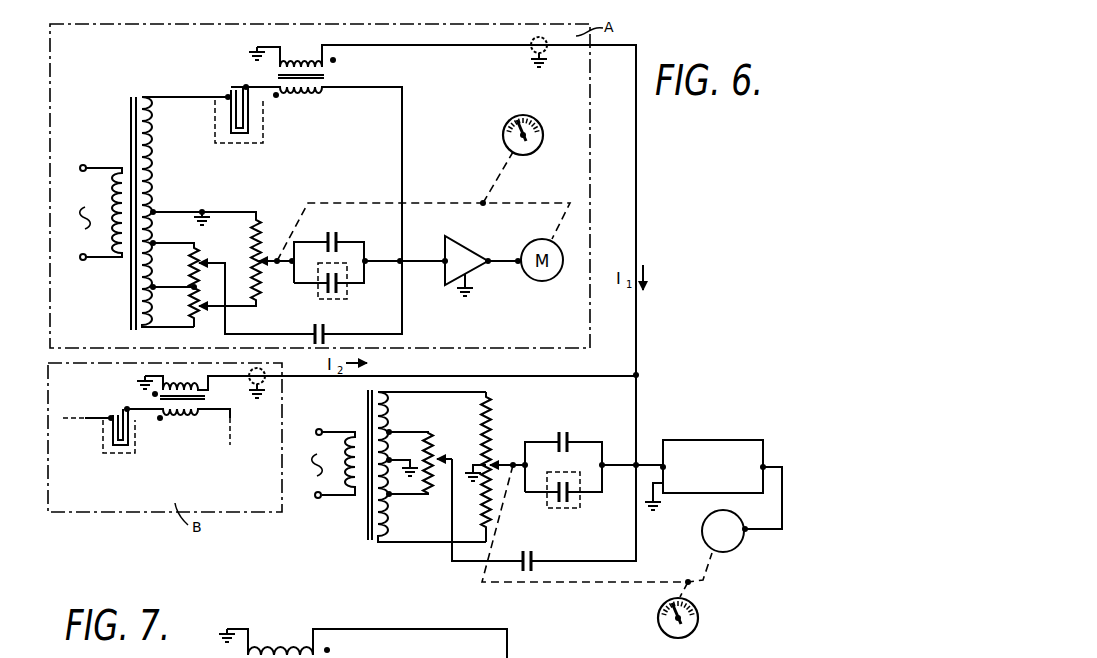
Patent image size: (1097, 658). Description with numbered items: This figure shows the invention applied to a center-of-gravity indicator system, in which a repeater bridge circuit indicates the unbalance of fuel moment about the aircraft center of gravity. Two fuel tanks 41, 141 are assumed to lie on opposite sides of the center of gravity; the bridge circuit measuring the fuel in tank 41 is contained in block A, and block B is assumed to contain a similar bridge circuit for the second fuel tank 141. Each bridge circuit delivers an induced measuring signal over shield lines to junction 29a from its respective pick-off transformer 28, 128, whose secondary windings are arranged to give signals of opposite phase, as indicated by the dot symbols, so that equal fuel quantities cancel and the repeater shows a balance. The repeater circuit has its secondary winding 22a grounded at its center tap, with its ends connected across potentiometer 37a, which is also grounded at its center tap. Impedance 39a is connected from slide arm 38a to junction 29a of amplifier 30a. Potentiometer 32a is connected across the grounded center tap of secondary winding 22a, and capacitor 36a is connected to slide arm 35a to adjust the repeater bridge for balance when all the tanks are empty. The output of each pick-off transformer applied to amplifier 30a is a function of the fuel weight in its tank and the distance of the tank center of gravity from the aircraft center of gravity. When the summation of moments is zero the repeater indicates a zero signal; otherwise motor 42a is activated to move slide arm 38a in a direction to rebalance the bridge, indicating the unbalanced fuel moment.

In FIG. 6, the pick-off transformer 28 is at (338, 76).
In FIG. 7, the pick-off transformer 28 is at (333, 657).
In FIG. 6, the fuel tank 41 is at (266, 130).
In FIG. 6, the pick-off transformer 128 is at (203, 399).
In FIG. 6, the fuel tank 141 is at (137, 444).
In FIG. 6, the secondary winding 22a is at (388, 421).
In FIG. 6, the potentiometer 32a is at (435, 477).
In FIG. 6, the slide arm 35a is at (440, 459).
In FIG. 6, the capacitor 36a is at (533, 557).
In FIG. 6, the potentiometer 37a is at (495, 420).
In FIG. 6, the slide arm 38a is at (503, 468).
In FIG. 6, the impedance 39a is at (578, 450).
In FIG. 6, the junction 29a is at (641, 462).
In FIG. 6, the amplifier 30a is at (753, 442).
In FIG. 6, the motor 42a is at (730, 542).